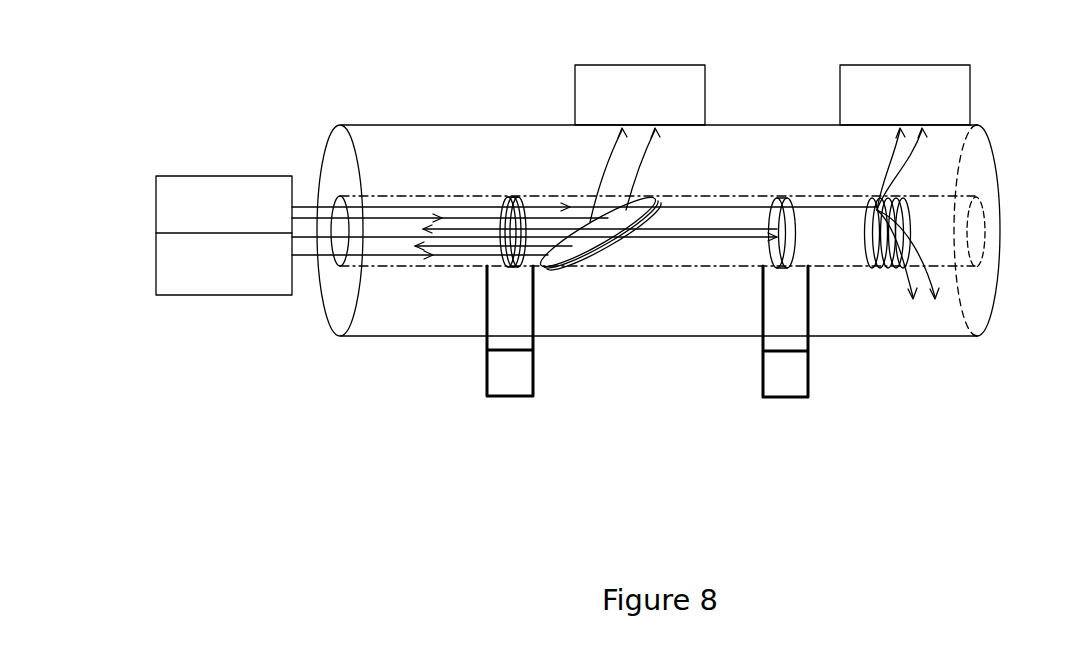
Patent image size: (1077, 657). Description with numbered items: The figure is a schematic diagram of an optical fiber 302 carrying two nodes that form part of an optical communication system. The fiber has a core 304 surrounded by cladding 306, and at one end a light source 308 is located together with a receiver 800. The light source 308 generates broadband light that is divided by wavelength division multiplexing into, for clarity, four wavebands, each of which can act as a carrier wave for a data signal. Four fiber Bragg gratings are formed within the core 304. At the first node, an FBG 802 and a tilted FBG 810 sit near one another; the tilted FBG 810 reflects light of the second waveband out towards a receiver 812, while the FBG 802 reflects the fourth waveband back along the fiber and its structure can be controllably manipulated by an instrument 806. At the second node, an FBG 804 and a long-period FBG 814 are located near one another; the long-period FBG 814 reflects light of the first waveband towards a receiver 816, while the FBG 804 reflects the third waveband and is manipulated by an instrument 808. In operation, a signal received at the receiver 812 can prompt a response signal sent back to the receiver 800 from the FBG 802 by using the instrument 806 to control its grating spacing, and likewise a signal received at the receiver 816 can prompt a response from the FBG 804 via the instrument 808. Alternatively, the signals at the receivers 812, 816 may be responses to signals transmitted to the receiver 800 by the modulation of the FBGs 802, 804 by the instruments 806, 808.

The optical fiber 302 is at (915, 337).
The core 304 is at (380, 203).
The cladding 306 is at (950, 152).
The light source 308 is at (173, 175).
The receiver 800 is at (177, 297).
The FBG 802 is at (513, 200).
The FBG 804 is at (788, 197).
The instrument 806 is at (502, 392).
The instrument 808 is at (775, 390).
The tilted FBG 810 is at (580, 263).
The receiver 812 is at (678, 72).
The long-period FBG 814 is at (877, 267).
The receiver 816 is at (932, 70).